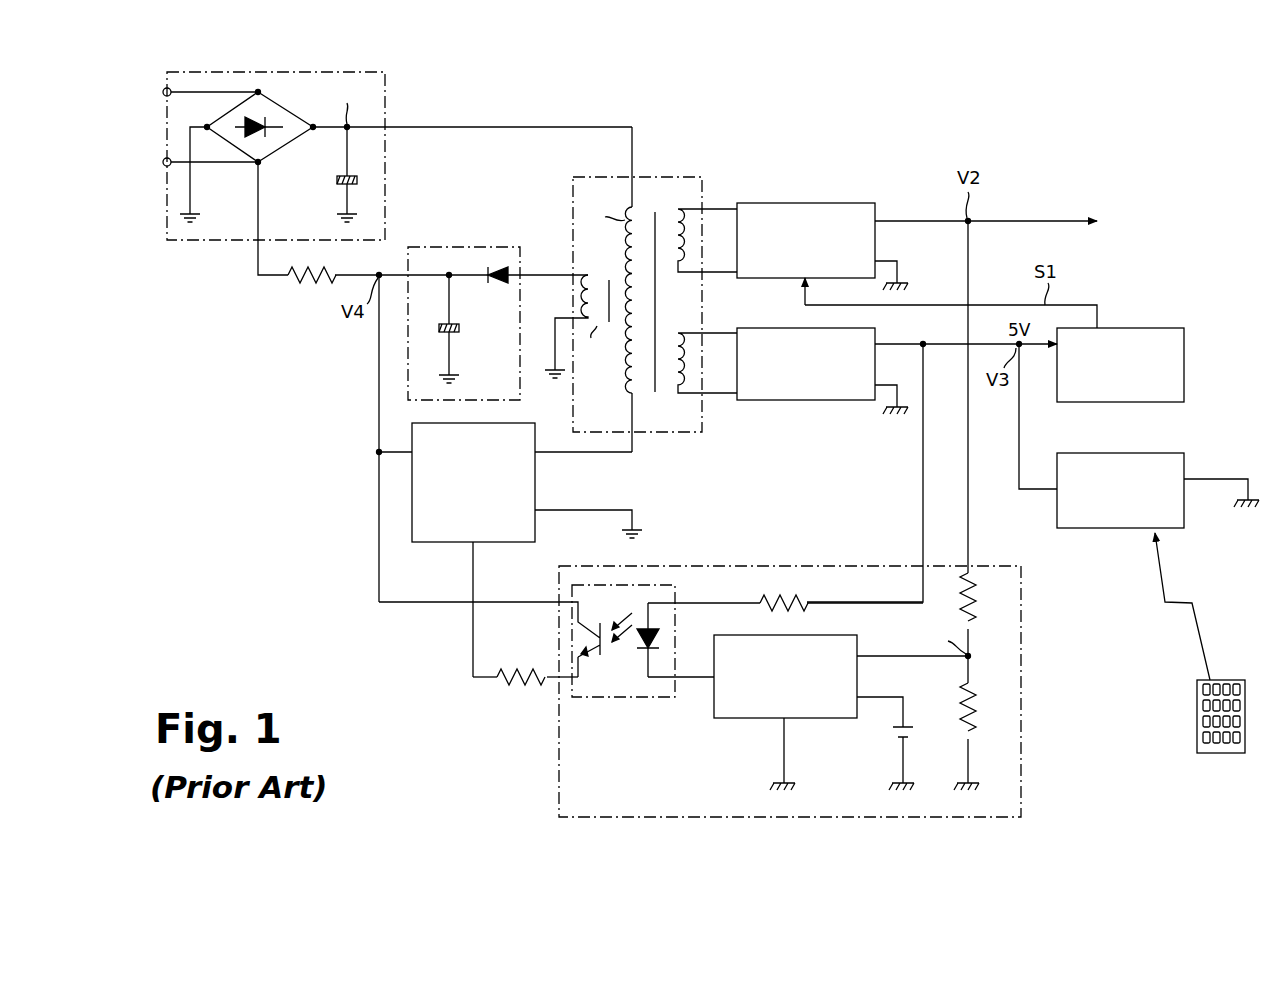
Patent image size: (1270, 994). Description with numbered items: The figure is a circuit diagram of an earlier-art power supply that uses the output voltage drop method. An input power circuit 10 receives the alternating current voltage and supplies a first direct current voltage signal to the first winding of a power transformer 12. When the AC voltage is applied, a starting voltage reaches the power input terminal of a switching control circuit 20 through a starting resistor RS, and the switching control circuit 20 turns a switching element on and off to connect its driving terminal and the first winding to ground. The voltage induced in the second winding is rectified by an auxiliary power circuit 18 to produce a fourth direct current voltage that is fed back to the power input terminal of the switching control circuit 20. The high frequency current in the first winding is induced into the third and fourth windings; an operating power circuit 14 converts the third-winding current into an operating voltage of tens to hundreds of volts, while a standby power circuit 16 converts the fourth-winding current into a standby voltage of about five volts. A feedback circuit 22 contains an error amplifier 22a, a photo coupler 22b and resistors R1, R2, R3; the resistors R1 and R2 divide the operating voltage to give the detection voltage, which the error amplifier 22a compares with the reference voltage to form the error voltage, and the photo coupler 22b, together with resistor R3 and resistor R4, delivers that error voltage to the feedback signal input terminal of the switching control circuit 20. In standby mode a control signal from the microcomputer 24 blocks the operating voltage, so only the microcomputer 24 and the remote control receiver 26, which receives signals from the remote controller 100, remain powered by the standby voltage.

The input power circuit 10 is at (313, 72).
The power transformer 12 is at (690, 177).
The operating power circuit 14 is at (796, 203).
The standby power circuit 16 is at (790, 400).
The auxiliary power circuit 18 is at (478, 247).
The switching control circuit 20 is at (442, 545).
The feedback circuit 22 is at (700, 544).
The error amplifier 22a is at (747, 720).
The photo coupler 22b is at (637, 698).
The microcomputer 24 is at (1168, 328).
The remote control receiver 26 is at (1065, 530).
The remote controller 100 is at (1232, 755).
The resistor R1 is at (984, 452).
The resistor R2 is at (981, 736).
The resistor R3 is at (841, 590).
The resistor R4 is at (525, 692).
The starting resistor RS is at (388, 288).